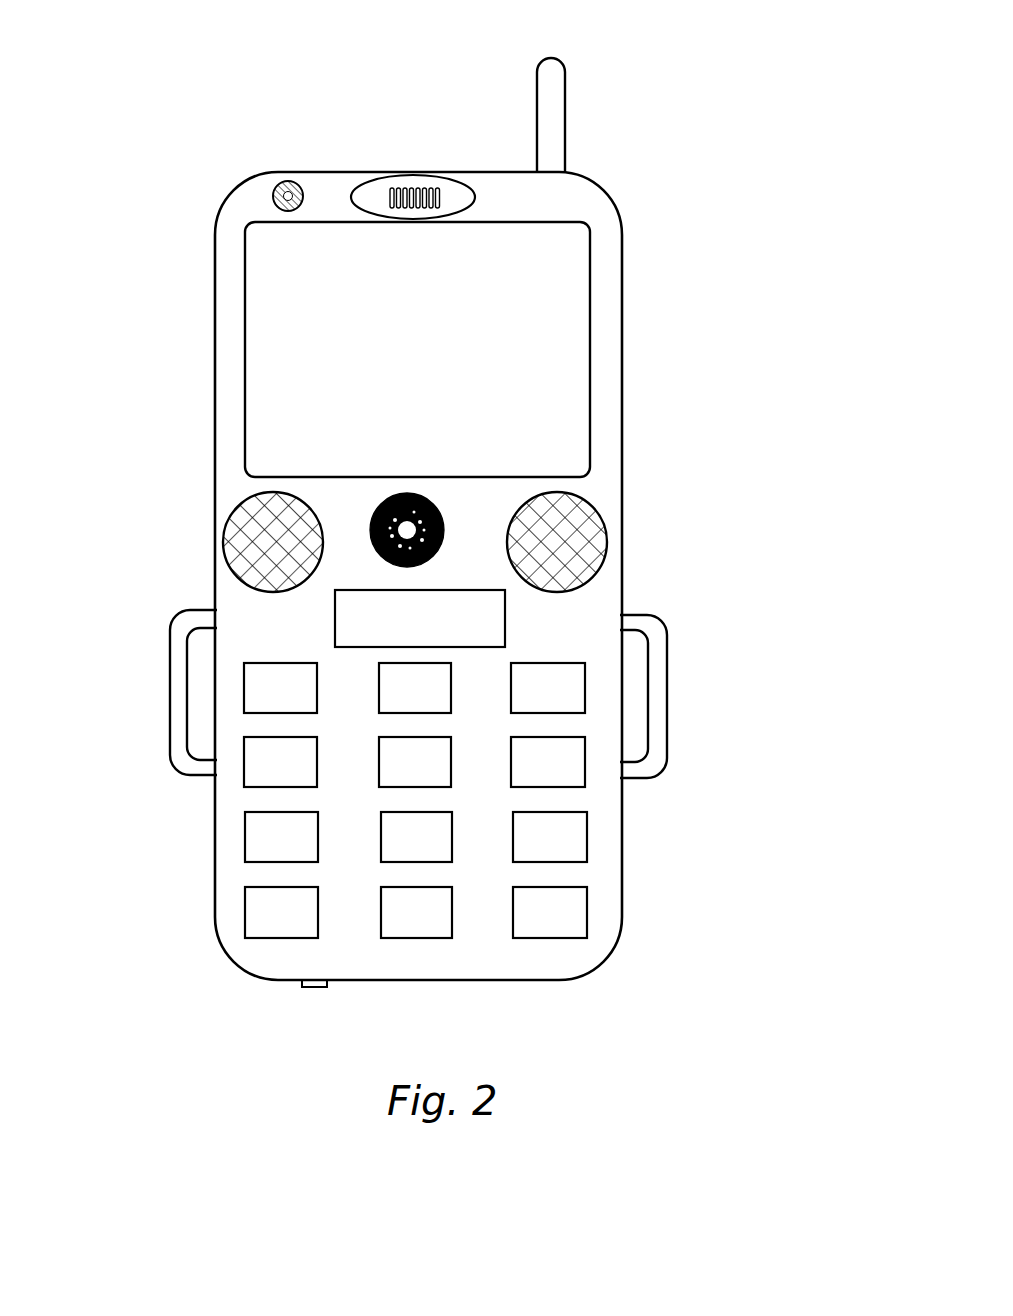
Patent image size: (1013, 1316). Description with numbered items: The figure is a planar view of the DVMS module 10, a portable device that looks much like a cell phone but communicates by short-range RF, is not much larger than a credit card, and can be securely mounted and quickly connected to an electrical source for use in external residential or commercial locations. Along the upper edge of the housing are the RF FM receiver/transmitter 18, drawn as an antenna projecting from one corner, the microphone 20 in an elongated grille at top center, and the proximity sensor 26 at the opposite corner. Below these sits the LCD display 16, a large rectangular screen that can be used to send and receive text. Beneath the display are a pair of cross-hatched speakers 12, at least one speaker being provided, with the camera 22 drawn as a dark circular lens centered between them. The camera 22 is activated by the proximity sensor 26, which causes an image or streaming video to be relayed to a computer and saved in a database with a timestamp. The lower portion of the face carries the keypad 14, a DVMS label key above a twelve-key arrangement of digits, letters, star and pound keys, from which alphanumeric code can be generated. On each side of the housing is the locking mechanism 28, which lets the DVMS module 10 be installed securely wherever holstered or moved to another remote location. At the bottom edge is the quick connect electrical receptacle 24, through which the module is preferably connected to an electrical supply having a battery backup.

The DVMS module 10 is at (632, 1009).
The speaker 12 is at (233, 565).
The keypad 14 is at (477, 785).
The LCD display 16 is at (507, 337).
The RF FM receiver/transmitter 18 is at (555, 127).
The microphone 20 is at (409, 195).
The camera 22 is at (372, 553).
The quick connect electrical receptacle 24 is at (312, 990).
The proximity sensor 26 is at (280, 192).
The locking mechanism 28 is at (668, 727).